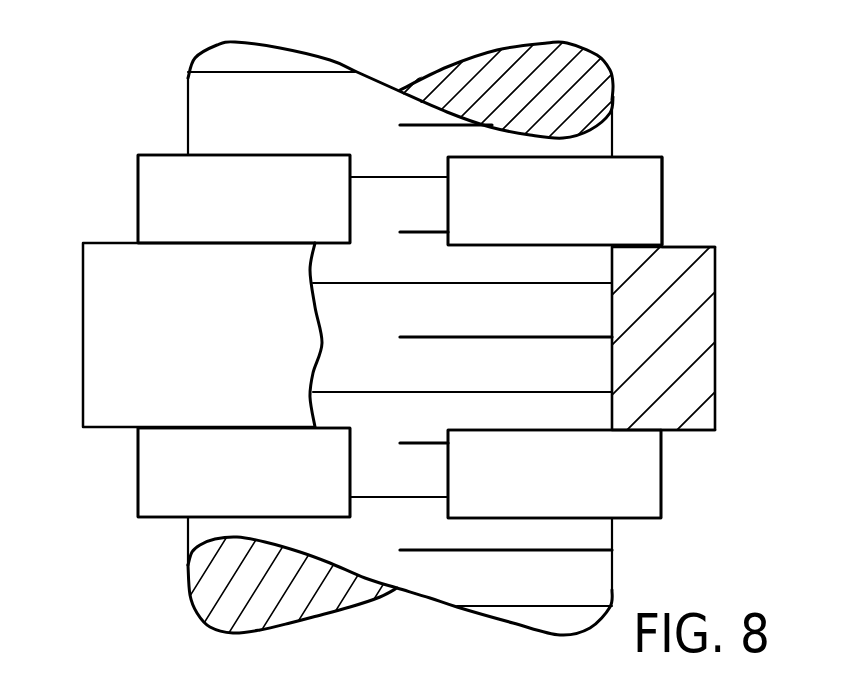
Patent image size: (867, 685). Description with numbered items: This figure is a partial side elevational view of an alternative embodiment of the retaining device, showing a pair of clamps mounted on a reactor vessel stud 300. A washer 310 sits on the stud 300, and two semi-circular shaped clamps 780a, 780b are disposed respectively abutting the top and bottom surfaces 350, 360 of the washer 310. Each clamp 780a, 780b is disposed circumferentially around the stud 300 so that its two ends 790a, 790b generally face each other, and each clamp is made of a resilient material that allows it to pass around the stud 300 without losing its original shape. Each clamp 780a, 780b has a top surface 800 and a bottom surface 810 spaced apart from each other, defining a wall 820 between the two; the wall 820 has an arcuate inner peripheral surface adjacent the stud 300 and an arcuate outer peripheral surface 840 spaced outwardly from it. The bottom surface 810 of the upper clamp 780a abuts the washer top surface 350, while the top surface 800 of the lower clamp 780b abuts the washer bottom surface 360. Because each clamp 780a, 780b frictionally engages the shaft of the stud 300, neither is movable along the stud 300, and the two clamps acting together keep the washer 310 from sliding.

The stud 300 is at (213, 85).
The washer 310 is at (710, 343).
The washer top surface 350 is at (683, 247).
The washer bottom surface 360 is at (678, 432).
The clamp 780a is at (373, 158).
The clamp 780b is at (375, 514).
The clamp end 790a is at (328, 177).
The clamp end 790b is at (515, 217).
The clamp top surface 800 is at (630, 157).
The clamp bottom surface 810 is at (612, 248).
The wall 820 is at (662, 172).
The outer peripheral surface 840 is at (138, 213).